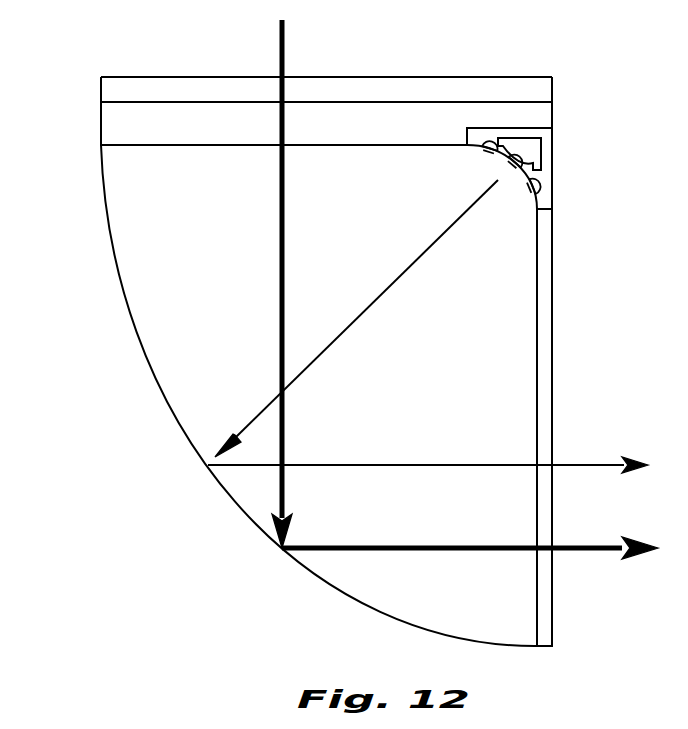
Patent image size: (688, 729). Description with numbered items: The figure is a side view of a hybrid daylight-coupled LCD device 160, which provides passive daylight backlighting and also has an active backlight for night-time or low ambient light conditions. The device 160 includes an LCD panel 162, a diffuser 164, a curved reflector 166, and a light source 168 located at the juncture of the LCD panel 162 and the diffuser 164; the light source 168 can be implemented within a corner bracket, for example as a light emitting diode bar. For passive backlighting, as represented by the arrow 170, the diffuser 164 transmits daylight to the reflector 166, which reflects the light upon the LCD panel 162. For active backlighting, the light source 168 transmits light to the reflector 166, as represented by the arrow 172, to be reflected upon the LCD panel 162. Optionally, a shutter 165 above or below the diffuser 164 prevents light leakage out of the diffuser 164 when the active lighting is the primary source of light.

The hybrid daylight-coupled LCD device 160 is at (530, 63).
The LCD panel 162 is at (553, 368).
The diffuser 164 is at (113, 123).
The shutter 165 is at (172, 77).
The curved reflector 166 is at (152, 378).
The light source 168 is at (545, 184).
The arrow 170 is at (284, 52).
The arrow 172 is at (375, 298).